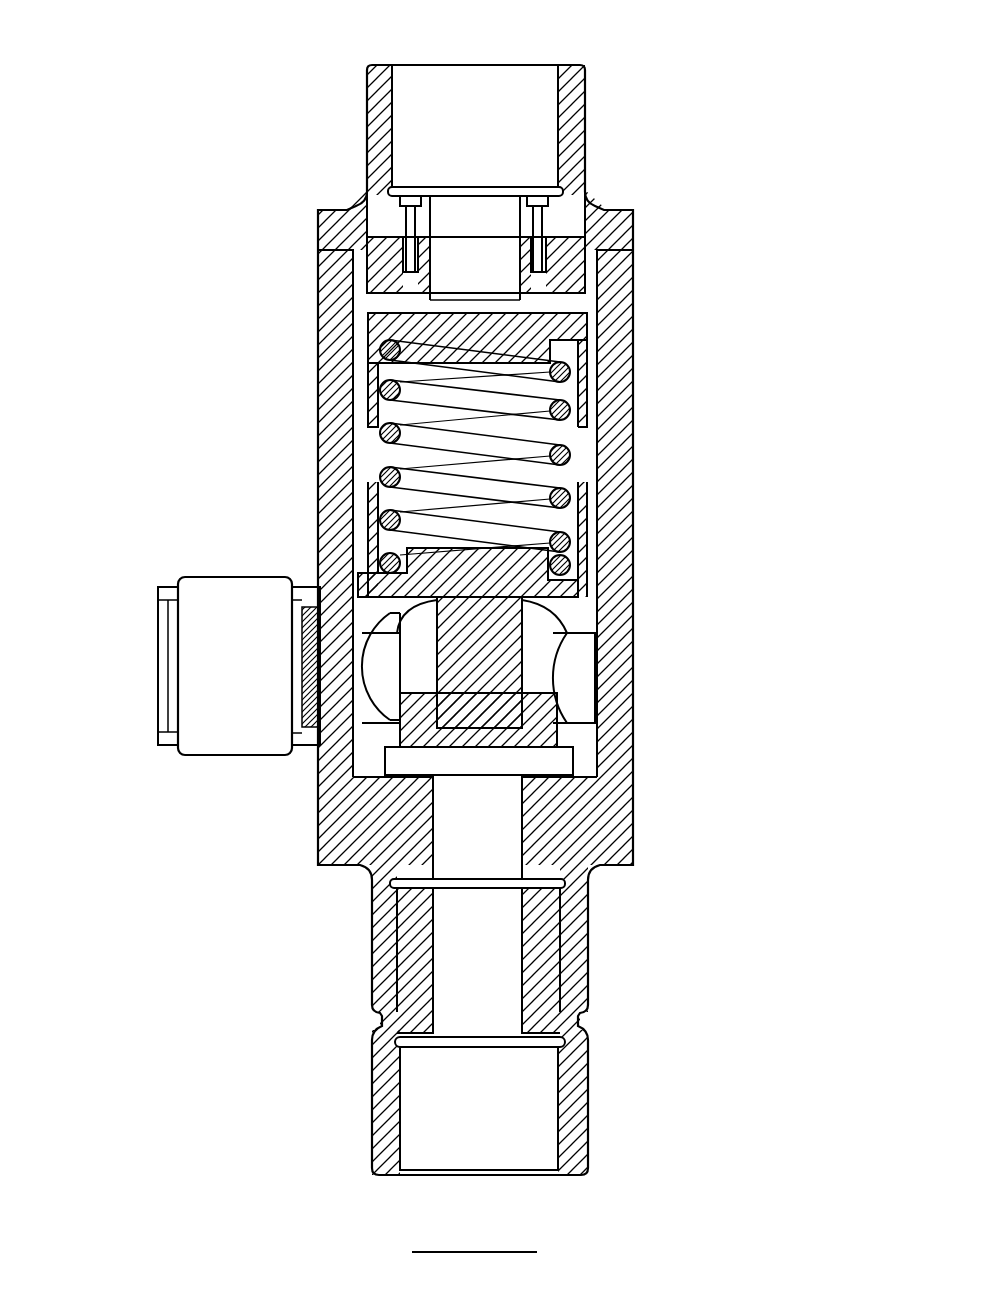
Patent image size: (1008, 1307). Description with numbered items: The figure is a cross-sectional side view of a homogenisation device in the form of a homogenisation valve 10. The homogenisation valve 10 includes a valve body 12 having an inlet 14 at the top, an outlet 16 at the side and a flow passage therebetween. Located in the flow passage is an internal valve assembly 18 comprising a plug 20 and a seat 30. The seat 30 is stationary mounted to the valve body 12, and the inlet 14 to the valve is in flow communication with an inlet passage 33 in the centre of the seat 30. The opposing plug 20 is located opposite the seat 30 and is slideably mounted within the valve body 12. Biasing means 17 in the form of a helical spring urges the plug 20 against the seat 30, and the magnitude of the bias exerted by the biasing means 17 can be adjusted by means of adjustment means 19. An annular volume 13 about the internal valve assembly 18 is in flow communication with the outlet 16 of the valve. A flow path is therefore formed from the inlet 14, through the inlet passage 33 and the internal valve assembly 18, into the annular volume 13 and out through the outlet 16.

The homogenisation valve 10 is at (724, 82).
The valve body 12 is at (625, 278).
The annular volume 13 is at (597, 352).
The inlet 14 is at (444, 92).
The outlet 16 is at (158, 665).
The biasing means 17 is at (538, 498).
The internal valve assembly 18 is at (475, 262).
The adjustment means 19 is at (577, 668).
The plug 20 is at (390, 338).
The seat 30 is at (387, 274).
The inlet passage 33 is at (496, 216).